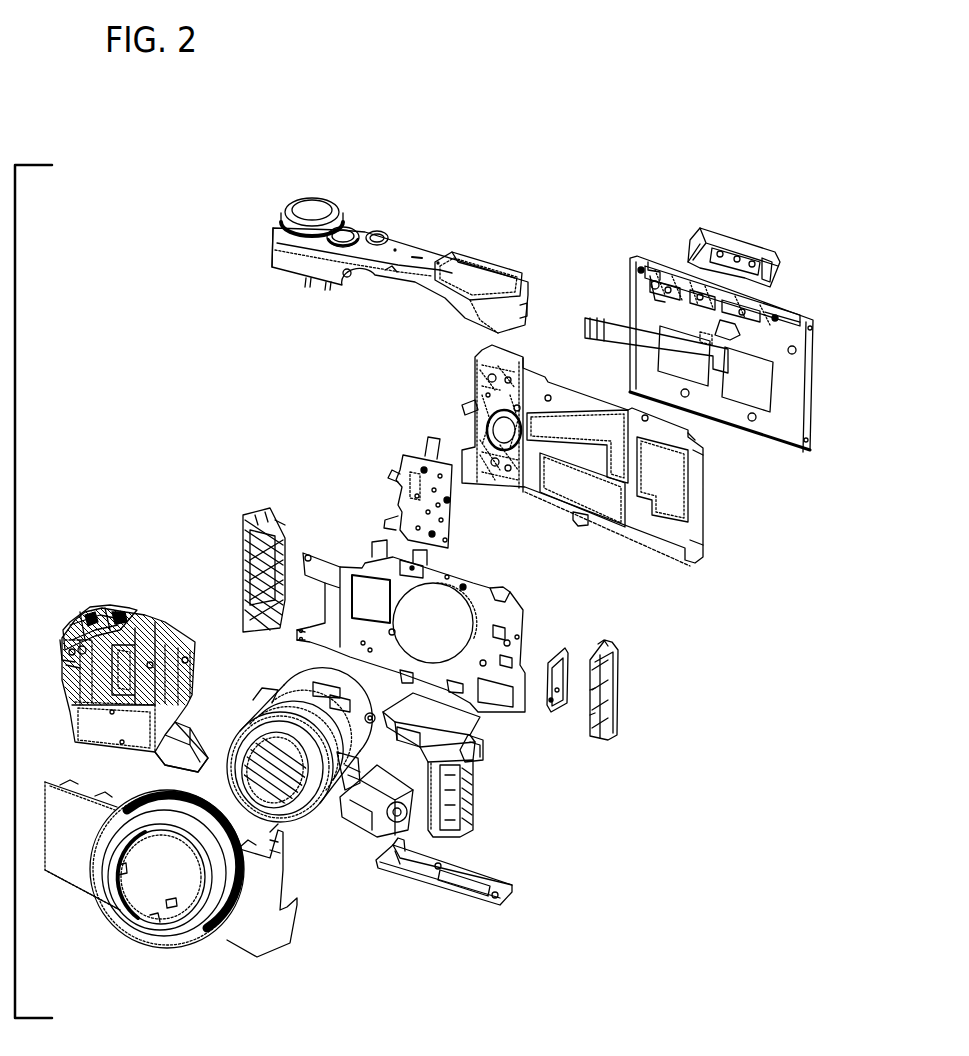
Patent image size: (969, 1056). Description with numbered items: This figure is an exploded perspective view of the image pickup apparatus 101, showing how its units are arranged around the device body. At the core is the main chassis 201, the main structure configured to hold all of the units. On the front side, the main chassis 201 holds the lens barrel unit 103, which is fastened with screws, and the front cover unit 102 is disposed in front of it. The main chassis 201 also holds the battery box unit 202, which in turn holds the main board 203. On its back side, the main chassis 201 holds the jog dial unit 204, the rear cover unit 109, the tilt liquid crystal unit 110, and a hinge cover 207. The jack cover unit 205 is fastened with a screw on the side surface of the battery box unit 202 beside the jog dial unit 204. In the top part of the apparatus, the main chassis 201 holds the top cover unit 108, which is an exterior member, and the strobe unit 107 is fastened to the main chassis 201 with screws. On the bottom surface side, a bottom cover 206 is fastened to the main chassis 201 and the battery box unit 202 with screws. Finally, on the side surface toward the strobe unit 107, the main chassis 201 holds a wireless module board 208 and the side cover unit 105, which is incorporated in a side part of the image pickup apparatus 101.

The image pickup apparatus 101 is at (619, 849).
The front cover unit 102 is at (270, 932).
The lens barrel unit 103 is at (312, 802).
The side cover unit 105 is at (618, 700).
The strobe unit 107 is at (478, 752).
The top cover unit 108 is at (408, 245).
The rear cover unit 109 is at (664, 528).
The tilt liquid crystal unit 110 is at (782, 428).
The main chassis 201 is at (527, 700).
The battery box unit 202 is at (101, 610).
The main board 203 is at (147, 610).
The jog dial unit 204 is at (418, 452).
The jack cover unit 205 is at (256, 512).
The bottom cover 206 is at (503, 898).
The hinge cover 207 is at (690, 243).
The wireless module board 208 is at (558, 705).